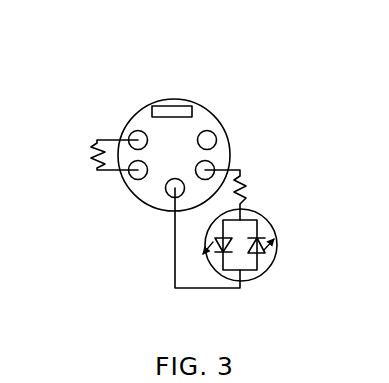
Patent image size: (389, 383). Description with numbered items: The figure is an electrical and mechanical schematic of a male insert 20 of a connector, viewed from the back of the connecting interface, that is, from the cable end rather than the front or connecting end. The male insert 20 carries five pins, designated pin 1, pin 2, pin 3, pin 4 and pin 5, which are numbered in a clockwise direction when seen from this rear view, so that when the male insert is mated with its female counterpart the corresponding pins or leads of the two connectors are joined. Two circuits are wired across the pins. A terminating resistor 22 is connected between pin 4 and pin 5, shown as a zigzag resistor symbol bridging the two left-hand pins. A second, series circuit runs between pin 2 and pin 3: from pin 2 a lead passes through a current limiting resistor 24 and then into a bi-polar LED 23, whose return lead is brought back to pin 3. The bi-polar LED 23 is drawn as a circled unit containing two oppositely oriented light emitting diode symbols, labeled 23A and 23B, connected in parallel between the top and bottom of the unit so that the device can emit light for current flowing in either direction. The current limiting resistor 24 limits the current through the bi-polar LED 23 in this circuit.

The male insert 20 is at (175, 100).
The pin 1 is at (215, 130).
The pin 2 is at (217, 165).
The pin 3 is at (158, 193).
The pin 4 is at (127, 174).
The pin 5 is at (133, 125).
The terminating resistor 22 is at (82, 153).
The current limiting resistor 24 is at (262, 193).
The bi-polar LED 23 is at (233, 266).
The light emitting diode 23A is at (207, 245).
The light emitting diode 23B is at (265, 237).